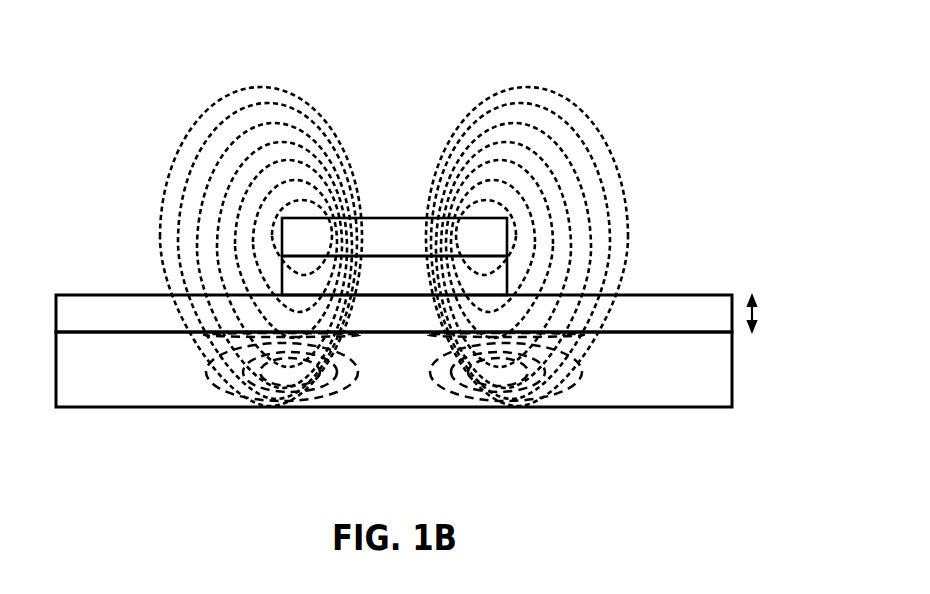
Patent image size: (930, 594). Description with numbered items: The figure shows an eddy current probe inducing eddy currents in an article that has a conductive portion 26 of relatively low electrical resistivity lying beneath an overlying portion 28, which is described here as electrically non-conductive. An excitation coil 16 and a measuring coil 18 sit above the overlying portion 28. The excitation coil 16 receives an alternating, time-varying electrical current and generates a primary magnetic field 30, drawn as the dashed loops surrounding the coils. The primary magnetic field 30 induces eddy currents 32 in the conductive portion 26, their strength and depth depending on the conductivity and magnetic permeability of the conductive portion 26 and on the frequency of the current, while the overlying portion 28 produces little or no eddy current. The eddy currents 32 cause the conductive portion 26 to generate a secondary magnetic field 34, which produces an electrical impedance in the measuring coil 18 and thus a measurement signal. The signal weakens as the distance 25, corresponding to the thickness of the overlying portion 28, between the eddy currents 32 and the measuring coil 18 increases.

The excitation coil 16 is at (408, 249).
The measuring coil 18 is at (408, 283).
The distance 25 is at (775, 313).
The conductive portion 26 is at (408, 325).
The overlying portion 28 is at (408, 380).
The primary magnetic field 30 is at (605, 85).
The eddy currents 32 is at (628, 356).
The secondary magnetic field 34 is at (541, 413).